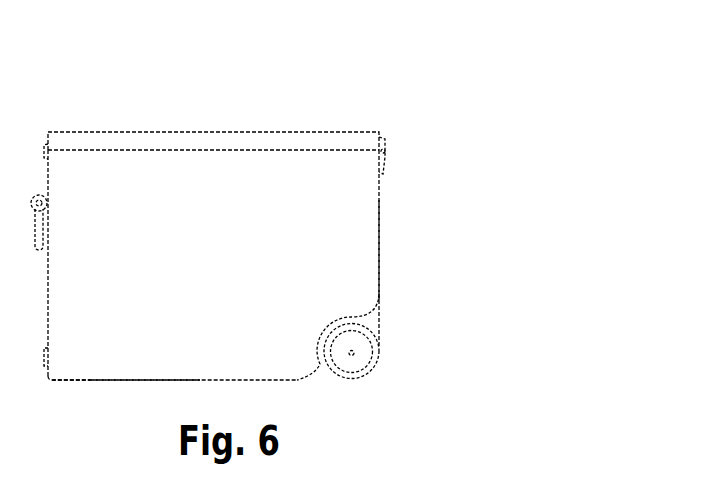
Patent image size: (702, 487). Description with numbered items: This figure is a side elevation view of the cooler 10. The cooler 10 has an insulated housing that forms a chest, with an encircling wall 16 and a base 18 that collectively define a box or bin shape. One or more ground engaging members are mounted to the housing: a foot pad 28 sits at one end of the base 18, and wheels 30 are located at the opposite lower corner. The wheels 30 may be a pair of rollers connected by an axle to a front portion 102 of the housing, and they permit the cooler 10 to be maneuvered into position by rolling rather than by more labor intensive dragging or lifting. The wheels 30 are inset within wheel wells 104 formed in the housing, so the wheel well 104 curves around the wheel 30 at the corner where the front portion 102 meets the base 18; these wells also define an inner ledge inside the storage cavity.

The cooler 10 is at (246, 88).
The encircling wall 16 is at (172, 260).
The base 18 is at (108, 382).
The foot pad 28 is at (79, 381).
The wheels 30 is at (372, 373).
The front portion 102 is at (381, 258).
The wheel wells 104 is at (381, 322).